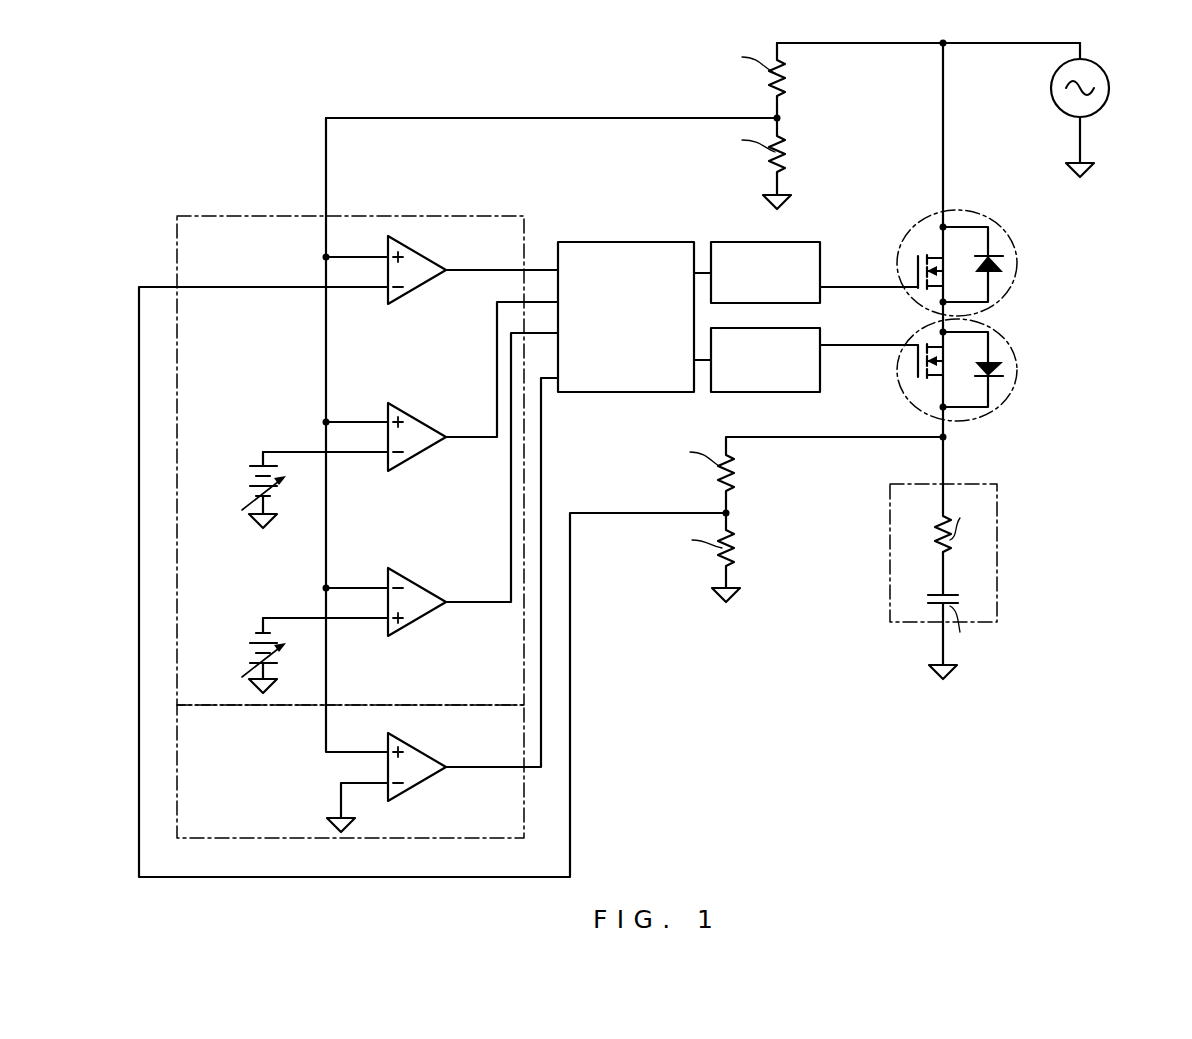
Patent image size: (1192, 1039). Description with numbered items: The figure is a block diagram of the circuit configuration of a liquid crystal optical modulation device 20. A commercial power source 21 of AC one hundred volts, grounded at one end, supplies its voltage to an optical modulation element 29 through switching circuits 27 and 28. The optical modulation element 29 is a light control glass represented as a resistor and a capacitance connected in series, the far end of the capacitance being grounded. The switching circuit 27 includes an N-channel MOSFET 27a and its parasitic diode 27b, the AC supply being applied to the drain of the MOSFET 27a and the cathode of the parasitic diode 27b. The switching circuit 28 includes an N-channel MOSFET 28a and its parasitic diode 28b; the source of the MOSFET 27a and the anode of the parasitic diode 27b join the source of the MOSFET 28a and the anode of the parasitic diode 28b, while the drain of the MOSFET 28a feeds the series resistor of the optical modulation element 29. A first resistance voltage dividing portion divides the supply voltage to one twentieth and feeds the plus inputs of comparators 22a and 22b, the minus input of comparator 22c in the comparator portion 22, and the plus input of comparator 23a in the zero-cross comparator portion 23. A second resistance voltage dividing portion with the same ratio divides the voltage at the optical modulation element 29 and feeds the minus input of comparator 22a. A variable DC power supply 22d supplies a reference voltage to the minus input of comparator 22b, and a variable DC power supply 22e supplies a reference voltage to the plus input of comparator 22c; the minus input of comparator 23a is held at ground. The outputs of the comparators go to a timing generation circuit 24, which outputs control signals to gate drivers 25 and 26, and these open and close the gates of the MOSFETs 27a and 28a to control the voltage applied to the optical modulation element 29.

The liquid crystal optical modulation device 20 is at (503, 79).
The commercial power source 21 is at (1109, 88).
The comparator portion 22 is at (243, 216).
The comparator 22a is at (415, 242).
The comparator 22b is at (415, 407).
The comparator 22c is at (417, 572).
The variable DC power supply 22d is at (243, 496).
The variable DC power supply 22e is at (243, 663).
The zero-cross comparator portion 23 is at (242, 838).
The comparator 23a is at (417, 739).
The timing generation circuit 24 is at (655, 242).
The gate driver 25 is at (805, 242).
The gate driver 26 is at (813, 328).
The switching circuit 27 is at (992, 218).
The N-channel MOSFET 27a is at (915, 264).
The parasitic diode 27b is at (1003, 266).
The switching circuit 28 is at (994, 425).
The N-channel MOSFET 28a is at (911, 384).
The parasitic diode 28b is at (1003, 372).
The optical modulation element 29 is at (997, 598).